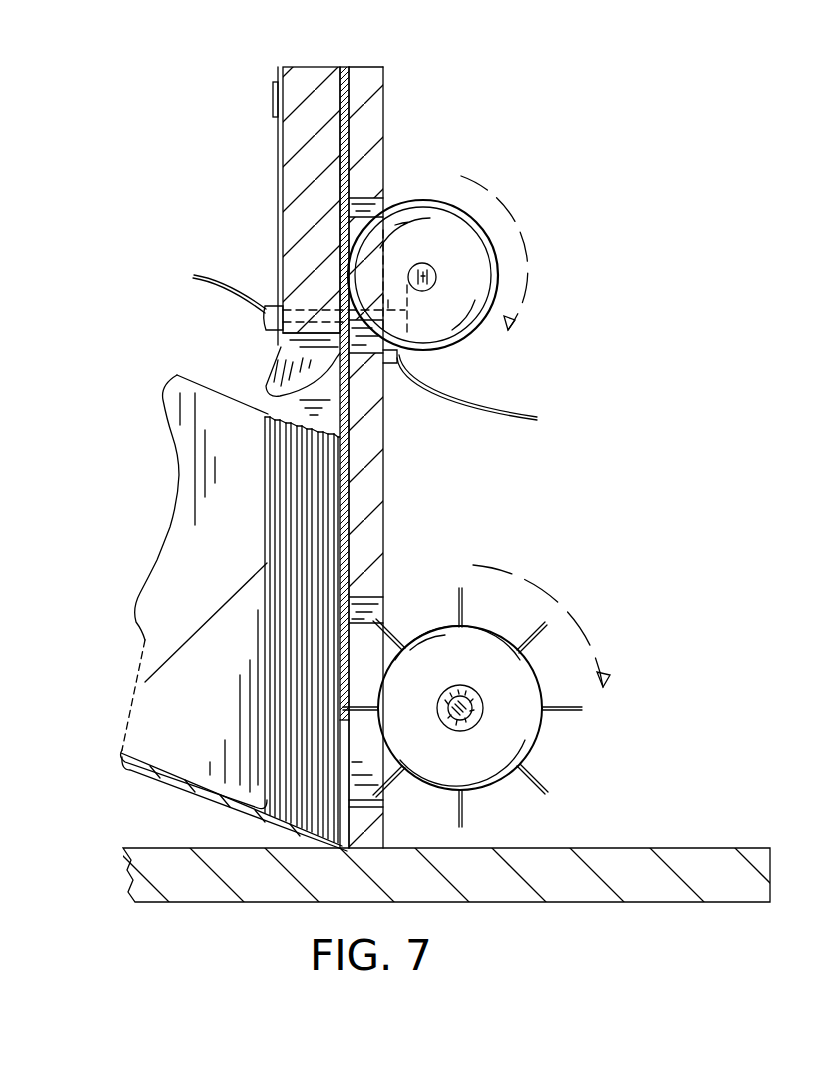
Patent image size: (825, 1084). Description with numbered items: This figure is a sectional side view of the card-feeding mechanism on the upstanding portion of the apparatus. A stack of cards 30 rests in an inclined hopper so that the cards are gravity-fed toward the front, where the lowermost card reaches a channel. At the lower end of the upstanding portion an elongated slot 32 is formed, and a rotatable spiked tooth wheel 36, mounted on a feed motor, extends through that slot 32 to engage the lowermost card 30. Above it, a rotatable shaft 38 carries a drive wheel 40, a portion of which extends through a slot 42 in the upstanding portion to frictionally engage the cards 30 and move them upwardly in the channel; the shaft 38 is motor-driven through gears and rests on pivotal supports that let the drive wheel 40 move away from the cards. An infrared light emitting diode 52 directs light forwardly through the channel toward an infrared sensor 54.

The card 30 is at (310, 532).
The elongated slot 32 is at (378, 610).
The spiked tooth wheel 36 is at (513, 732).
The shaft 38 is at (430, 282).
The drive wheel 40 is at (463, 253).
The slot 42 is at (385, 200).
The infrared light emitting diode 52 is at (258, 306).
The infrared sensor 54 is at (413, 375).